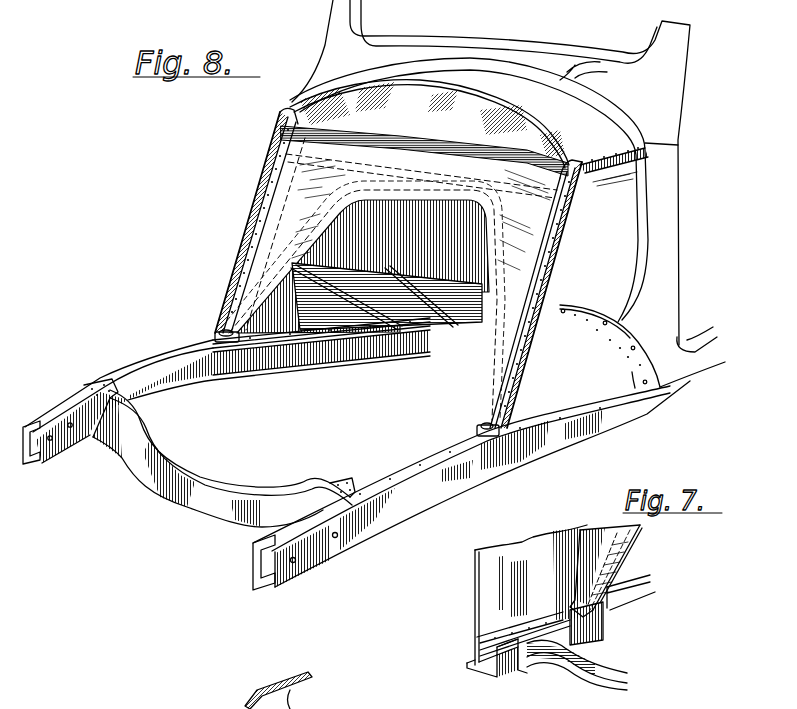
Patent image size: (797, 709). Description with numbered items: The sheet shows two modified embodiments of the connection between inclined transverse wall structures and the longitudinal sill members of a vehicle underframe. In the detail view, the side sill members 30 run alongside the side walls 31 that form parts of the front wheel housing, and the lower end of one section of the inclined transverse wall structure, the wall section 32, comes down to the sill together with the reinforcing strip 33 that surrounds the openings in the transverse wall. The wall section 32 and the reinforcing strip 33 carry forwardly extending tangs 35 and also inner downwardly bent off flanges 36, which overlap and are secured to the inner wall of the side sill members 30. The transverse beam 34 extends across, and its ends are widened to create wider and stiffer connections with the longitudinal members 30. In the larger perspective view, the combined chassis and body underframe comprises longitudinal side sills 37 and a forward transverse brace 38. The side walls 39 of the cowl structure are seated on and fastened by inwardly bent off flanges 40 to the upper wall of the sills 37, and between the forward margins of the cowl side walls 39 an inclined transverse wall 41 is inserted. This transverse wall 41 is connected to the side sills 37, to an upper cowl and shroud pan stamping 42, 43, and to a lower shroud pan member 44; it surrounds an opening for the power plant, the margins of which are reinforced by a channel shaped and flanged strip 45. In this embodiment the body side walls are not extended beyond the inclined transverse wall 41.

In FIG. 7, the side sill member 30 is at (510, 670).
In FIG. 7, the side wall of the front wheel housing 31 is at (525, 551).
In FIG. 7, the wall section of inclined transverse wall structure 32 is at (613, 534).
In FIG. 7, the reinforcing strip 33 is at (637, 547).
In FIG. 7, the transverse beam 34 is at (613, 660).
In FIG. 7, the forwardly extending tang 35 is at (600, 633).
In FIG. 7, the inner downwardly bent off flange 36 is at (605, 612).
In FIG. 8, the longitudinal side sill 37 is at (224, 375).
In FIG. 8, the forward transverse brace 38 is at (206, 478).
In FIG. 8, the side wall of the cowl structure 39 is at (593, 255).
In FIG. 8, the inwardly bent off flange 40 is at (312, 354).
In FIG. 8, the inclined transverse wall 41 is at (500, 340).
In FIG. 8, the upper cowl and shroud pan stamping 42 is at (520, 83).
In FIG. 8, the upper cowl and shroud pan stamping 43 is at (380, 93).
In FIG. 8, the lower shroud pan member 44 is at (422, 272).
In FIG. 8, the channel shaped and flanged strip 45 is at (277, 240).